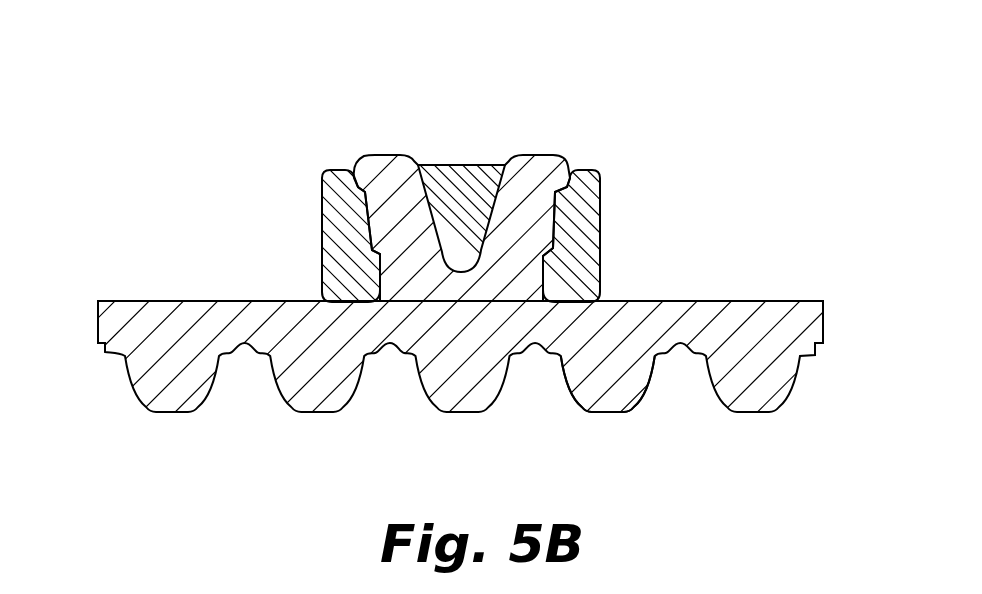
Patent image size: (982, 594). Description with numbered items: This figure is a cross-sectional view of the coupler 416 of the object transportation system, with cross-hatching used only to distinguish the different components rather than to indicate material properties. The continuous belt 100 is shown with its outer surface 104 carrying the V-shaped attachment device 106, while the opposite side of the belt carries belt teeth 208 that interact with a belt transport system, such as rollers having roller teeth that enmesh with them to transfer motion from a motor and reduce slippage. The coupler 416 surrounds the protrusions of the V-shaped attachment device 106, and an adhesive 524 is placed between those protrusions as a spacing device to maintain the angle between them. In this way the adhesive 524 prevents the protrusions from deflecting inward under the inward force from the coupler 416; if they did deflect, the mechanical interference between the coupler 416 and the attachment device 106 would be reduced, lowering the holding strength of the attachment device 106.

The continuous belt 100 is at (491, 249).
The outer surface 104 is at (196, 303).
The attachment device 106 is at (537, 175).
The belt teeth 208 is at (610, 387).
The coupler 416 is at (333, 242).
The adhesive 524 is at (445, 177).